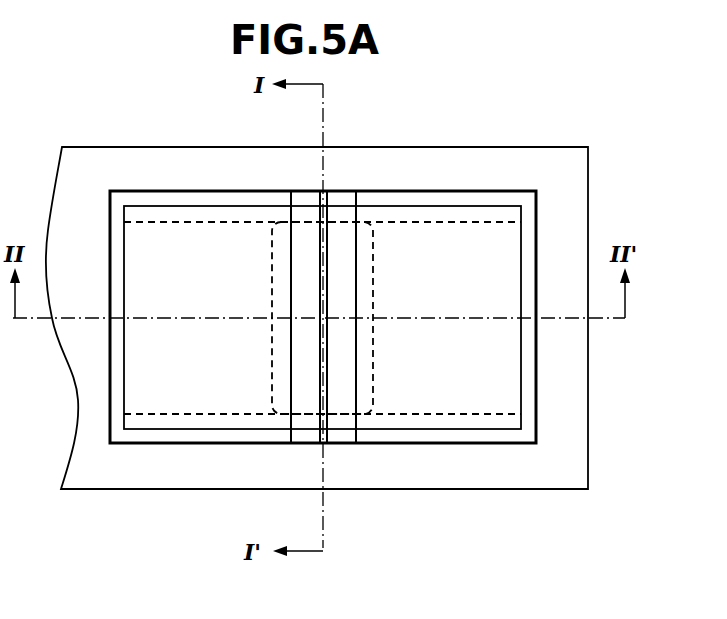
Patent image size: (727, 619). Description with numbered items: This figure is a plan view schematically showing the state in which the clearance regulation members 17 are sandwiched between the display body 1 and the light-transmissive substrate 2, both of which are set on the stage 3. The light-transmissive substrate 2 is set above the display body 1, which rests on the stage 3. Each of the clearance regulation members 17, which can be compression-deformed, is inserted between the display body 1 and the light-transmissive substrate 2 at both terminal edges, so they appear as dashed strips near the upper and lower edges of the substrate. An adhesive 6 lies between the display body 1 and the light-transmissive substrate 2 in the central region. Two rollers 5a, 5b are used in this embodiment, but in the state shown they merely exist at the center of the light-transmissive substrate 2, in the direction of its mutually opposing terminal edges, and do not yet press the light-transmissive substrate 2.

The display body 1 is at (124, 187).
The light-transmissive substrate 2 is at (172, 235).
The stage 3 is at (578, 197).
The roller 5a is at (303, 200).
The roller 5b is at (340, 198).
The adhesive 6 is at (272, 363).
The clearance regulation member 17 is at (460, 215).